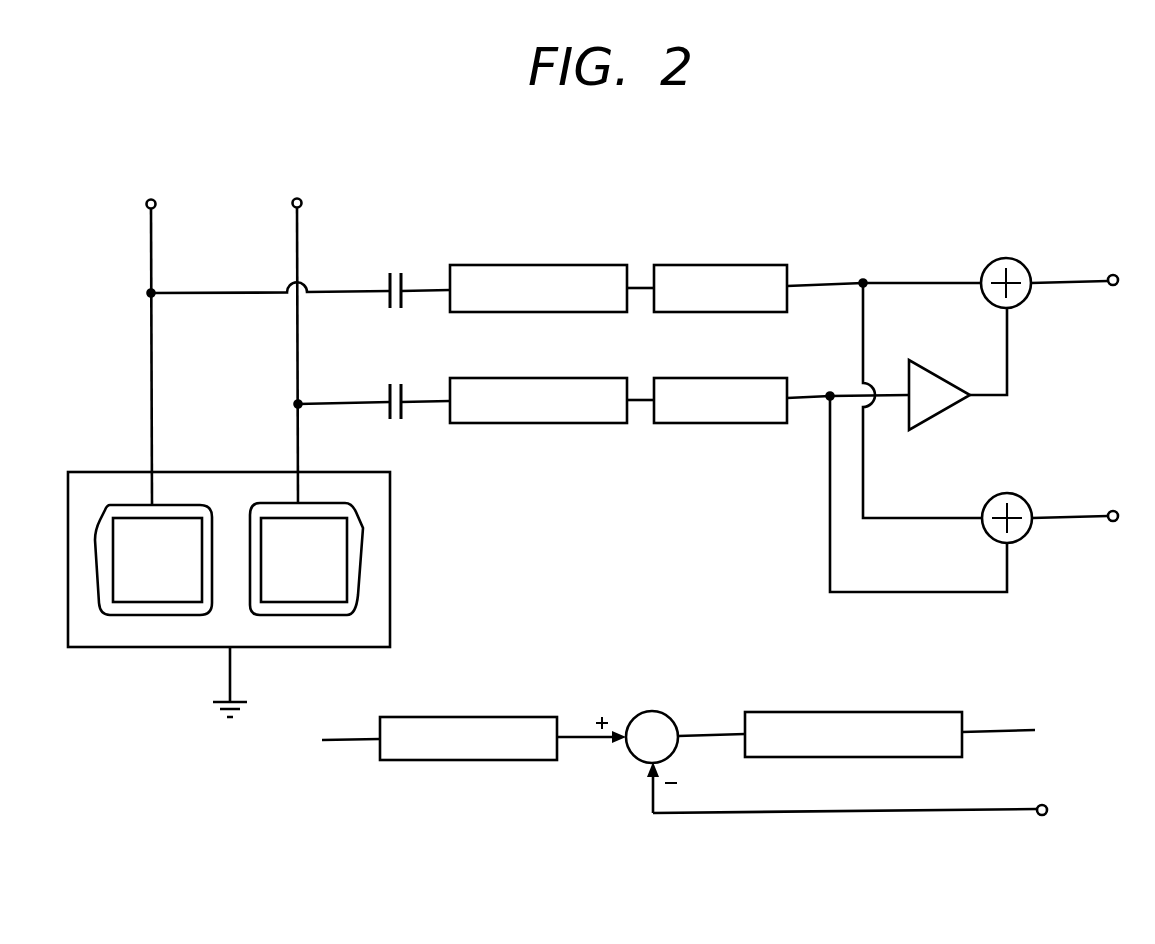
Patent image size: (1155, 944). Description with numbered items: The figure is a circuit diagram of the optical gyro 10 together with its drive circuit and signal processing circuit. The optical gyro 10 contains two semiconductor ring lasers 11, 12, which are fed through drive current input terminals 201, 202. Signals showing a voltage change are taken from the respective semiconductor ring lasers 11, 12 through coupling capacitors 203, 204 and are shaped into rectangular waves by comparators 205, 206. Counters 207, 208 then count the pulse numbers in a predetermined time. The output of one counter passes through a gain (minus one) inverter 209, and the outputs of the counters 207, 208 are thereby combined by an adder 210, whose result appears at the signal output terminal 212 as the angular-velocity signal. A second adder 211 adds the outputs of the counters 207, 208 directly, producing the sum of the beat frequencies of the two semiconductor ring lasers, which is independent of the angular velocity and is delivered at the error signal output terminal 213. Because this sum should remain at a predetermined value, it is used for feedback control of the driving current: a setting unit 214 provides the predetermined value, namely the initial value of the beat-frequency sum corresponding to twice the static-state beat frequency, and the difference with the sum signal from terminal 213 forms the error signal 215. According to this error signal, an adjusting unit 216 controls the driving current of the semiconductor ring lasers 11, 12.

The optical gyro 10 is at (377, 497).
The semiconductor ring laser 11 is at (178, 508).
The semiconductor ring laser 12 is at (327, 508).
The drive current input terminal 201 is at (154, 200).
The drive current input terminal 202 is at (300, 199).
The coupling capacitor 203 is at (396, 271).
The coupling capacitor 204 is at (396, 382).
The comparator 205 is at (575, 265).
The comparator 206 is at (575, 378).
The counter 207 is at (740, 265).
The counter 208 is at (740, 378).
The gain (-1) inverter 209 is at (943, 380).
The adder 210 is at (1011, 259).
The adder 211 is at (1012, 494).
The signal output terminal 212 is at (1116, 275).
The error signal output terminal 213 is at (1117, 511).
The setting unit 214 is at (505, 717).
The error signal 215 is at (1046, 805).
The adjusting unit 216 is at (912, 712).